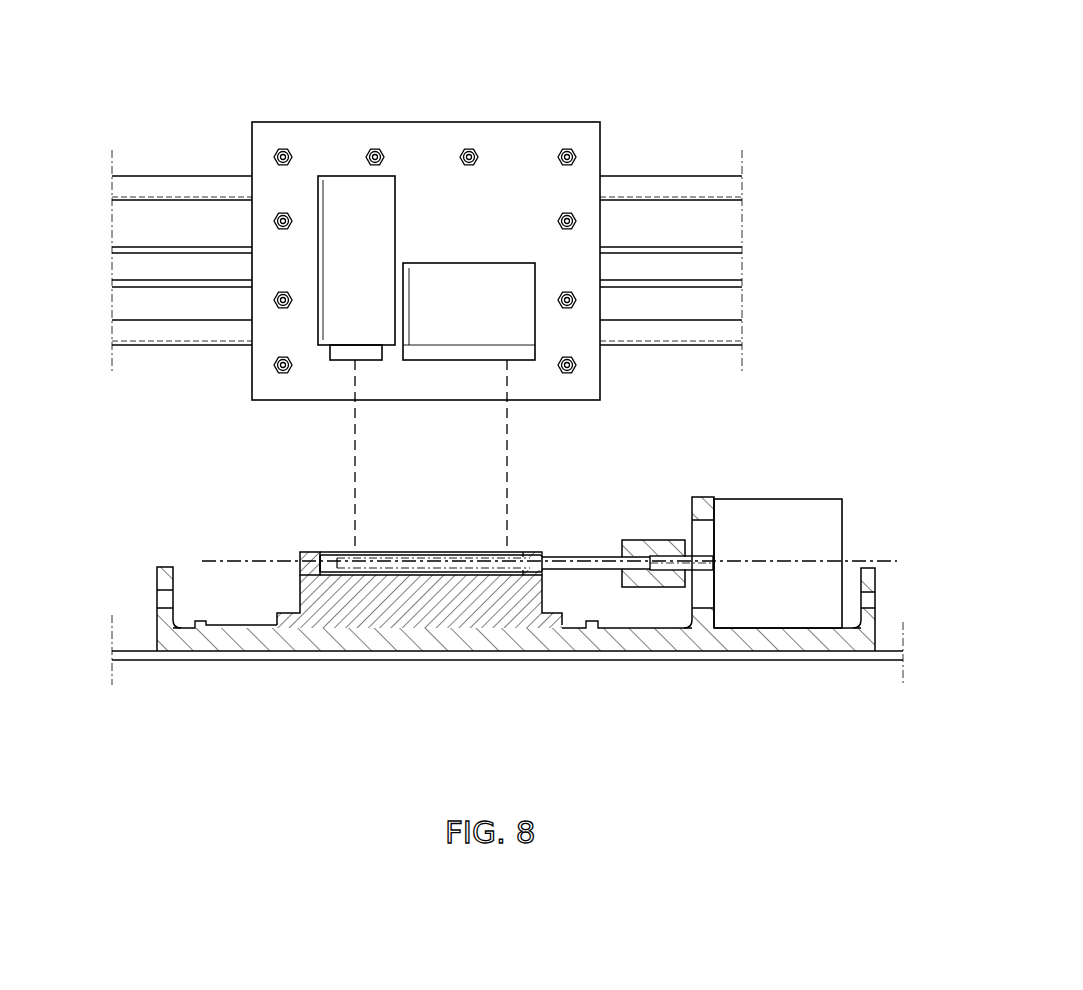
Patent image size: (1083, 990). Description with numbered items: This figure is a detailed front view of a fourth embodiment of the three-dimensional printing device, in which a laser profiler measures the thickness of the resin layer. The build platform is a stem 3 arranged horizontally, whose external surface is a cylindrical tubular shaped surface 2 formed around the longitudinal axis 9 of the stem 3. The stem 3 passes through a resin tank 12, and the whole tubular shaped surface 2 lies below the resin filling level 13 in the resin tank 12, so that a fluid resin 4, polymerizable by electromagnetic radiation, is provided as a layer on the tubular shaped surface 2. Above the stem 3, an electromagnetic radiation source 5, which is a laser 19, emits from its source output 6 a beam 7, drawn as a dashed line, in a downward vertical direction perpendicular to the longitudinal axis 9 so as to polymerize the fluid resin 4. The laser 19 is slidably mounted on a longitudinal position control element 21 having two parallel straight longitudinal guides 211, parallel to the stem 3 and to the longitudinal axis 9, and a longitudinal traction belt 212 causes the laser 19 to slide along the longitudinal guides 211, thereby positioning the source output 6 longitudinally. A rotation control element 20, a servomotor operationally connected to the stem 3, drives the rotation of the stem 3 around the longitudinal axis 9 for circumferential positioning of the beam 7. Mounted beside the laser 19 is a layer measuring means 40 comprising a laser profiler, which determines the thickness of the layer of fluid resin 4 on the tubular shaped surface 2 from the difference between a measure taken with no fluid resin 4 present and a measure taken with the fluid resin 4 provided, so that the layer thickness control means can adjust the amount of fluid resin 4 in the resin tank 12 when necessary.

The tubular shaped surface 2 is at (438, 555).
The stem 3 is at (593, 565).
The fluid resin 4 is at (327, 570).
The electromagnetic radiation source 5 is at (361, 166).
The source output 6 is at (352, 362).
The beam 7 is at (352, 482).
The longitudinal axis 9 is at (232, 562).
The resin tank 12 is at (392, 600).
The resin filling level 13 is at (327, 550).
The laser 19 is at (340, 210).
The rotation control element 20 is at (815, 498).
The longitudinal position control element 21 is at (614, 170).
The layer measuring means 40 is at (485, 277).
The longitudinal guides 211 is at (193, 183).
The longitudinal traction belt 212 is at (160, 247).